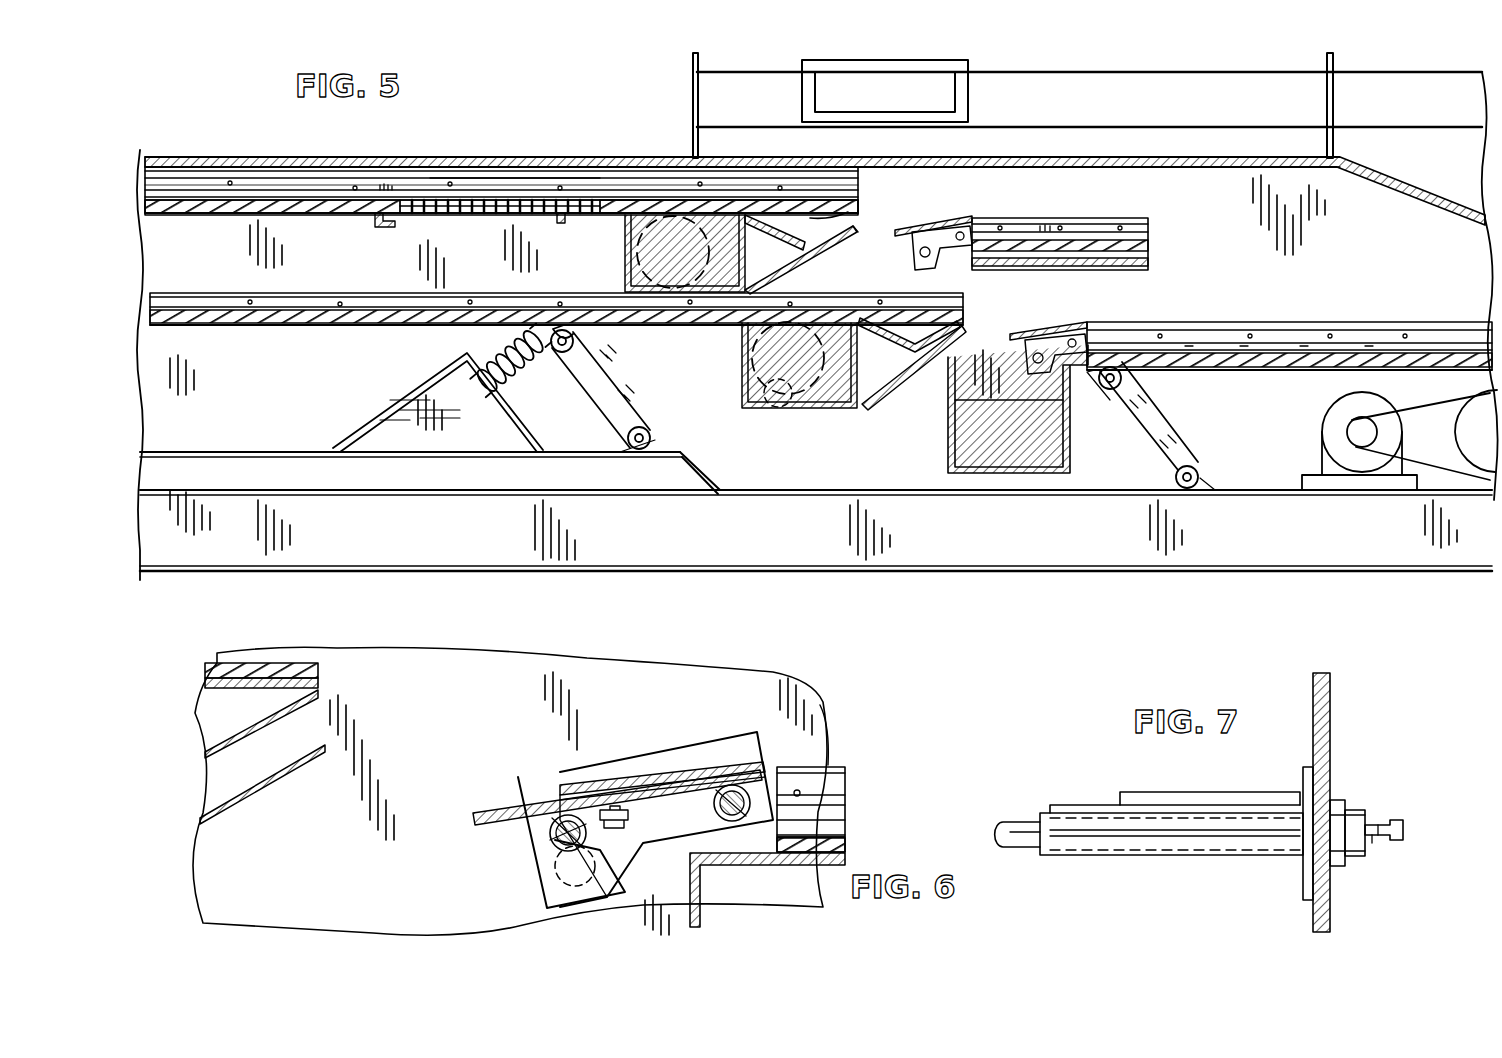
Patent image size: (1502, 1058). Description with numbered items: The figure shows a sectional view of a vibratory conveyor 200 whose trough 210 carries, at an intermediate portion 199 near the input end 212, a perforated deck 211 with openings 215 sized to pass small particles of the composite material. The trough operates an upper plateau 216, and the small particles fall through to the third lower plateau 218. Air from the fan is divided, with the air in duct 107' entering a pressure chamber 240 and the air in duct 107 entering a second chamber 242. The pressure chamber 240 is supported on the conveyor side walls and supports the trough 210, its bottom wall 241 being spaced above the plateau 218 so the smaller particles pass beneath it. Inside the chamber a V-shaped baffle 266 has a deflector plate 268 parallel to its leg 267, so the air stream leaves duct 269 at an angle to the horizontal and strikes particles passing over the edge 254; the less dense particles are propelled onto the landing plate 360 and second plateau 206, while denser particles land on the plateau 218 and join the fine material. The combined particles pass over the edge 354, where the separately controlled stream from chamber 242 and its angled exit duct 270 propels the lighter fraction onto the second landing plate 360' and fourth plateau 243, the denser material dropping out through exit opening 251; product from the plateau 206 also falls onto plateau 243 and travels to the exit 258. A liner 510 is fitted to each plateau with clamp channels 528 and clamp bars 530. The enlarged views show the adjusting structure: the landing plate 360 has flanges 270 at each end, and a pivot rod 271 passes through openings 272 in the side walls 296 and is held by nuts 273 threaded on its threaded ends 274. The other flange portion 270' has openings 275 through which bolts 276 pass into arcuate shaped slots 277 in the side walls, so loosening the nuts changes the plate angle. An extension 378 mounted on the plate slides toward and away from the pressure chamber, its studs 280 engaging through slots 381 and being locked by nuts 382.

In FIG. 5, the vibratory conveyor 200 is at (600, 140).
In FIG. 5, the input end 212 is at (265, 148).
In FIG. 5, the openings 215 is at (507, 198).
In FIG. 5, the trough 210 is at (435, 200).
In FIG. 5, the intermediate portion 199 is at (556, 166).
In FIG. 5, the upper plateau 216 is at (610, 206).
In FIG. 5, the perforated deck 211 is at (210, 216).
In FIG. 5, the clamp bars 530 is at (188, 182).
In FIG. 6, the clamp bars 530 is at (830, 791).
In FIG. 5, the clamp channels 528 is at (167, 202).
In FIG. 6, the clamp channels 528 is at (855, 841).
In FIG. 5, the liner 510 is at (137, 205).
In FIG. 6, the liner 510 is at (838, 832).
In FIG. 5, the third lower plateau 218 is at (203, 303).
In FIG. 5, the pressure chamber 240 is at (632, 234).
In FIG. 5, the duct 107' is at (630, 252).
In FIG. 5, the V-shaped baffle 266 is at (795, 231).
In FIG. 5, the deflector plate 268 is at (825, 257).
In FIG. 5, the leg 267 is at (852, 216).
In FIG. 5, the duct 269 is at (848, 234).
In FIG. 5, the chamber 242 is at (748, 364).
In FIG. 5, the duct 107 is at (788, 385).
In FIG. 5, the bottom wall 241 is at (657, 322).
In FIG. 5, the flanges 270 is at (912, 381).
In FIG. 5, the exit opening 251 is at (1018, 409).
In FIG. 5, the second plateau 206 is at (1118, 238).
In FIG. 5, the extension 378 is at (930, 226).
In FIG. 6, the extension 378 is at (500, 800).
In FIG. 7, the extension 378 is at (1242, 798).
In FIG. 5, the landing plate 360 is at (989, 200).
In FIG. 6, the landing plate 360 is at (666, 794).
In FIG. 5, the edge 254 is at (875, 204).
In FIG. 5, the fourth plateau 243 is at (1143, 328).
In FIG. 5, the edge 354 is at (982, 332).
In FIG. 5, the second landing plate 360' is at (1078, 330).
In FIG. 5, the exit 258 is at (1437, 330).
In FIG. 6, the openings 275 is at (564, 768).
In FIG. 6, the slots 381 is at (658, 768).
In FIG. 6, the side walls 296 is at (810, 708).
In FIG. 6, the openings 272 is at (775, 786).
In FIG. 6, the bolts 276 is at (525, 828).
In FIG. 6, the arcuate shaped slots 277 is at (560, 856).
In FIG. 6, the nuts 382 is at (677, 835).
In FIG. 6, the studs 280 is at (687, 870).
In FIG. 6, the flange portion 270' is at (811, 864).
In FIG. 7, the flange portion 270' is at (1281, 802).
In FIG. 7, the pivot rod 271 is at (1020, 822).
In FIG. 7, the nuts 273 is at (1355, 820).
In FIG. 7, the threaded ends 274 is at (1380, 842).